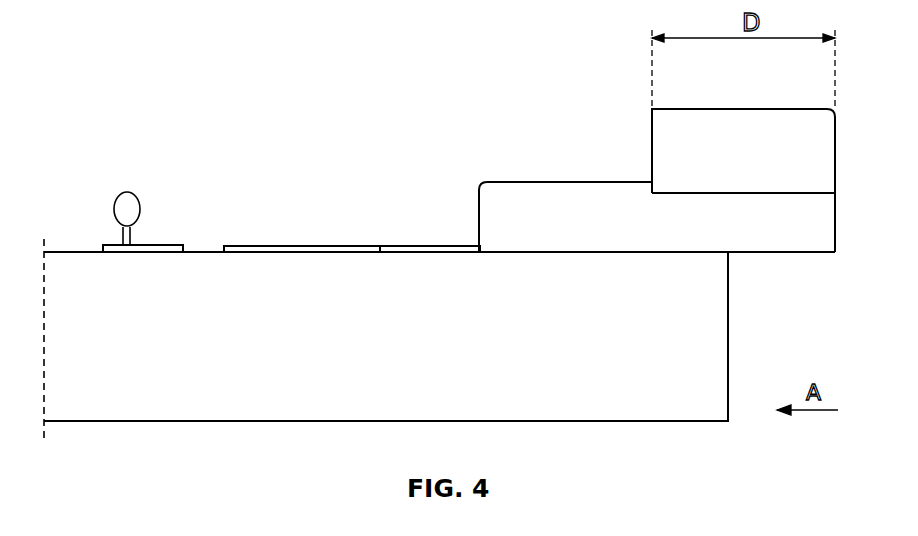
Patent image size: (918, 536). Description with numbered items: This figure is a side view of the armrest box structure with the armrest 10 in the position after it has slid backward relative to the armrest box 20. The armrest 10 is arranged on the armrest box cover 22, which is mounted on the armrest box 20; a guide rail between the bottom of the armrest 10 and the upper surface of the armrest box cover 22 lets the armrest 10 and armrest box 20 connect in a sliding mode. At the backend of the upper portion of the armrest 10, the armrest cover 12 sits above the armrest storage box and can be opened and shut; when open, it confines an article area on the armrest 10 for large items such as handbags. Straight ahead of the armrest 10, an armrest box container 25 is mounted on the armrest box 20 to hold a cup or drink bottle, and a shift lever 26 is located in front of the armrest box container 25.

The armrest 10 is at (536, 191).
The armrest cover 12 is at (780, 160).
The armrest box 20 is at (198, 288).
The armrest box cover 22 is at (410, 248).
The armrest box container 25 is at (290, 247).
The shift lever 26 is at (128, 210).